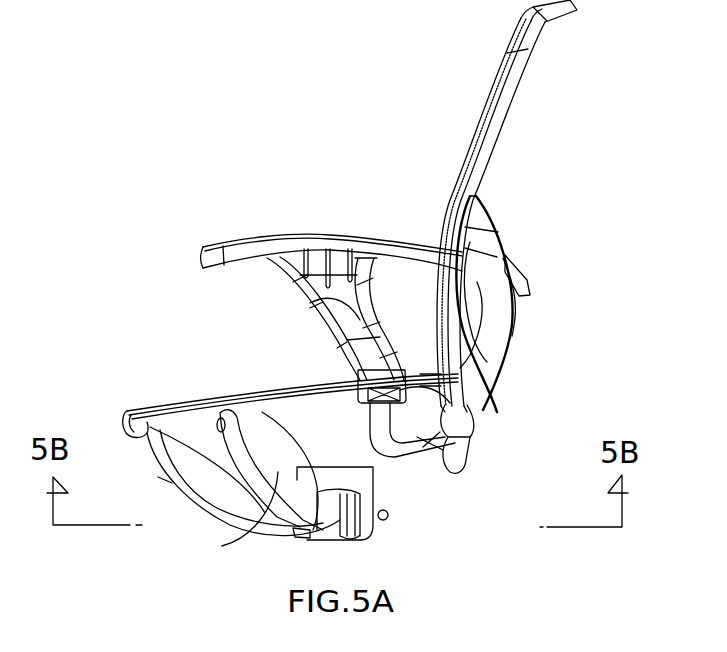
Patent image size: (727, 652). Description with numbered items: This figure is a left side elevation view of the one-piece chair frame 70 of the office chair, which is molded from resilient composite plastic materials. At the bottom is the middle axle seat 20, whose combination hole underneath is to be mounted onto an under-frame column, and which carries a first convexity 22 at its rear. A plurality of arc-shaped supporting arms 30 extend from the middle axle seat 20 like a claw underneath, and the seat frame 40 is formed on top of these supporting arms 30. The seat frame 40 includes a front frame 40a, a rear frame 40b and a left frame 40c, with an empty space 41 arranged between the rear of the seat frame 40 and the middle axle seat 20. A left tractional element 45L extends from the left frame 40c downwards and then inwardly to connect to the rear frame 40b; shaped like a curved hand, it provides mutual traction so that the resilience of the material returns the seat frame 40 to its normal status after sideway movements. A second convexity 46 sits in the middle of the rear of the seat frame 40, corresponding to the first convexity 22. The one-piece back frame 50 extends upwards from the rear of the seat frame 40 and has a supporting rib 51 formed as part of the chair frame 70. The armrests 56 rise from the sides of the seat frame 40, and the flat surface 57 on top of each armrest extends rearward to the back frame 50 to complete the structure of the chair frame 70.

The chair frame 70 is at (251, 68).
The back frame 50 is at (504, 102).
The supporting rib 51 is at (493, 292).
The armrests 56 is at (338, 300).
The flat surface 57 is at (401, 243).
The seat frame 40 is at (138, 390).
The front frame 40a is at (125, 413).
The rear frame 40b is at (482, 390).
The left frame 40c is at (212, 405).
The supporting arms 30 is at (187, 503).
The middle axle seat 20 is at (340, 480).
The first convexity 22 is at (387, 520).
The empty space 41 is at (400, 483).
The left tractional element 45L is at (425, 447).
The second convexity 46 is at (443, 467).